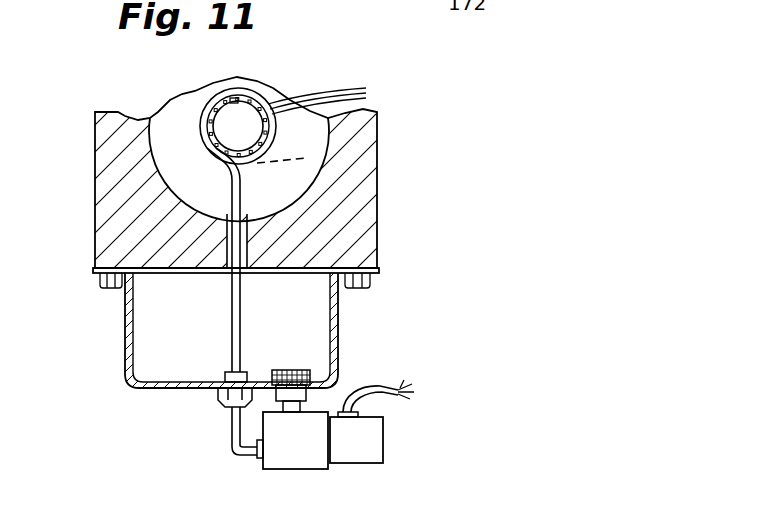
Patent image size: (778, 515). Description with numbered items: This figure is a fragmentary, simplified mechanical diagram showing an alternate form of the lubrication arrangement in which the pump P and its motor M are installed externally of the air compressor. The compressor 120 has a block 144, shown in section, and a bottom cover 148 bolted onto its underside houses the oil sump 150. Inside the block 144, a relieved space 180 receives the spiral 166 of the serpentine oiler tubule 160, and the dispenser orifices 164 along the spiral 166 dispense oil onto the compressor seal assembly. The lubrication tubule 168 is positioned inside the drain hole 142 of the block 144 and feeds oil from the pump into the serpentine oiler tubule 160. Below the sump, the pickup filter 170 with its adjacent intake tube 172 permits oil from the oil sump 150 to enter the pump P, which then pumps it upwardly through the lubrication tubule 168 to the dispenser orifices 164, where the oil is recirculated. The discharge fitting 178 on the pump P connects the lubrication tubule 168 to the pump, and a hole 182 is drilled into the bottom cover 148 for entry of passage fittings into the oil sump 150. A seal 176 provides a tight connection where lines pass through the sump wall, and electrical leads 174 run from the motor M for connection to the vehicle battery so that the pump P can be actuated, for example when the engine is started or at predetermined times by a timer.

The compressor 120 is at (408, 211).
The drain hole 142 is at (250, 247).
The block 144 is at (372, 188).
The bottom cover 148 is at (244, 330).
The oil sump 150 is at (325, 310).
The serpentine oiler tubule 160 is at (188, 134).
The dispenser orifices 164 is at (337, 97).
The spiral 166 is at (255, 92).
The lubrication tubule 168 is at (232, 313).
The pickup filter 170 is at (292, 363).
The intake tube 172 is at (233, 440).
The electrical leads 174 is at (400, 393).
The seal 176 is at (212, 384).
The discharge fitting 178 is at (260, 462).
The relieved space 180 is at (308, 158).
The hole 182 is at (253, 375).